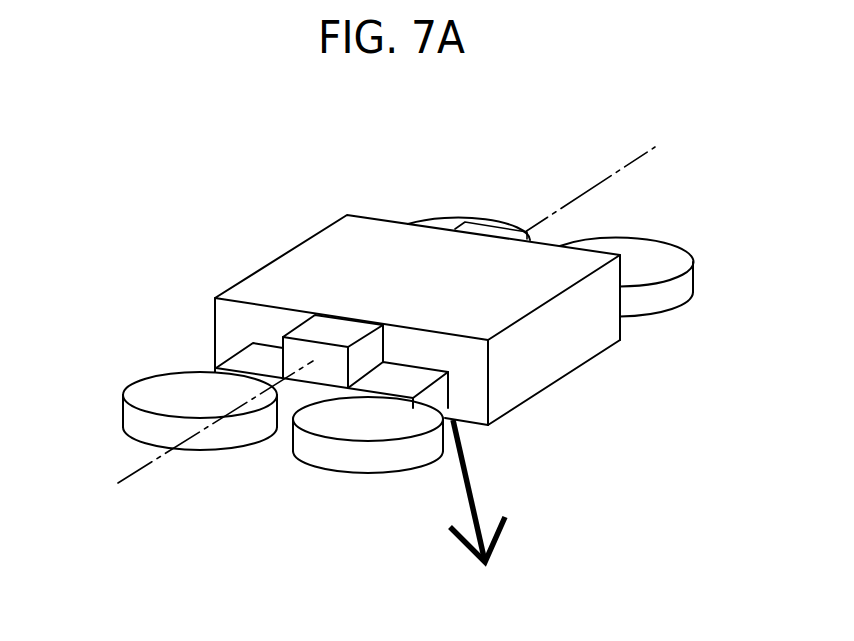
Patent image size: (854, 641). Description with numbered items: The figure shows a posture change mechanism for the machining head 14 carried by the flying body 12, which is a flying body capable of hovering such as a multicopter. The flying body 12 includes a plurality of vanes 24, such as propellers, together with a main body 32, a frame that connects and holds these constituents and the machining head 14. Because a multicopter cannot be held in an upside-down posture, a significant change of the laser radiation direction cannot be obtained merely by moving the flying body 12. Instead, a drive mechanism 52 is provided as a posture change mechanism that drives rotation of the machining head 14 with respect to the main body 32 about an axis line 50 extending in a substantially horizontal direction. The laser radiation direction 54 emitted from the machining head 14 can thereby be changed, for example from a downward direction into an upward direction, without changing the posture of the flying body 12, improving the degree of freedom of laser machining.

The flying body 12 is at (137, 173).
The machining head 14 is at (333, 237).
The vanes 24 is at (670, 302).
The main body 32 is at (290, 400).
The axis line 50 is at (647, 152).
The drive mechanism 52 is at (313, 333).
The laser radiation direction 54 is at (477, 490).